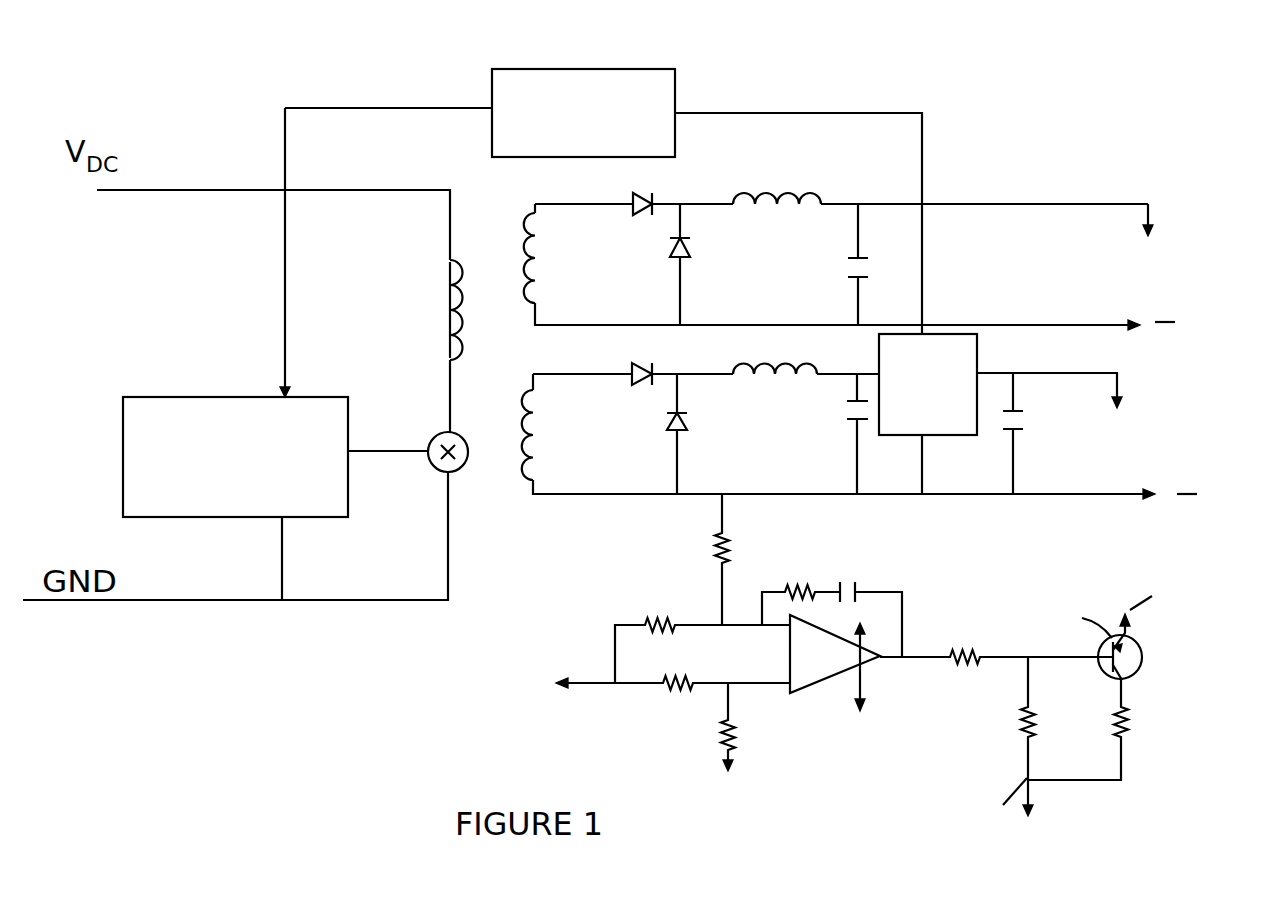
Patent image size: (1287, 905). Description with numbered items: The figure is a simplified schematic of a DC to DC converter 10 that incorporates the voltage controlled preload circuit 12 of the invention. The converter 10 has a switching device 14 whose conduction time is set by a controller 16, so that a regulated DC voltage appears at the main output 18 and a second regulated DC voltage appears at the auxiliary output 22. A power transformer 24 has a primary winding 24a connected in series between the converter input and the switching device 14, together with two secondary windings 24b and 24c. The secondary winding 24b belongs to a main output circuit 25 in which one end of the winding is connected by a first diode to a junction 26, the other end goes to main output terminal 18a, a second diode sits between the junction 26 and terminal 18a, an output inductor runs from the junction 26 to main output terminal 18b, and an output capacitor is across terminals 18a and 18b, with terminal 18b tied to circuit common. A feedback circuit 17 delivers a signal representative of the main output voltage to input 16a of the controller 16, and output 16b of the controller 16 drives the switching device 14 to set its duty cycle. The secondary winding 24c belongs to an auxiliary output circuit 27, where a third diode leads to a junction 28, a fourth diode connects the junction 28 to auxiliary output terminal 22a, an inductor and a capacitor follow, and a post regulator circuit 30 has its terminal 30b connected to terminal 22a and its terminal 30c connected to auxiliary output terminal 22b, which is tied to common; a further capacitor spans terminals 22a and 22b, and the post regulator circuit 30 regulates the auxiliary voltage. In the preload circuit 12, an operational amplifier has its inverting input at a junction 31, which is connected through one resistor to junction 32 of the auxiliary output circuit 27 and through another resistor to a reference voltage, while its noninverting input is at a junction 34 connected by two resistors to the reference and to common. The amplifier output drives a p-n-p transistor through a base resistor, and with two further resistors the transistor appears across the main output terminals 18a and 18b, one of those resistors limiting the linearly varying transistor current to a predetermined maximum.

The converter 10 is at (268, 109).
The voltage controlled preload circuit 12 is at (588, 579).
The switching device 14 is at (430, 470).
The controller 16 is at (120, 437).
The controller input 16a is at (305, 395).
The controller output 16b is at (350, 455).
The feedback circuit 17 is at (686, 79).
The main output 18 is at (1156, 231).
The main output terminal 18a is at (1113, 318).
The main output terminal 18b is at (1137, 190).
The auxiliary output 22 is at (1144, 450).
The auxiliary output terminal 22a is at (1100, 496).
The auxiliary output terminal 22b is at (1090, 372).
The power transformer 24 is at (484, 325).
The primary winding 24a is at (443, 290).
The secondary winding 24b is at (548, 270).
The secondary winding 24c is at (540, 442).
The main output circuit 25 is at (841, 242).
The junction 26 is at (693, 185).
The auxiliary output circuit 27 is at (838, 414).
The junction 28 is at (692, 357).
The post regulator circuit 30 is at (965, 435).
The post regulator terminal 30b is at (925, 496).
The post regulator terminal 30c is at (1007, 362).
The junction 31 is at (757, 628).
The junction 32 is at (702, 497).
The junction 34 is at (730, 686).